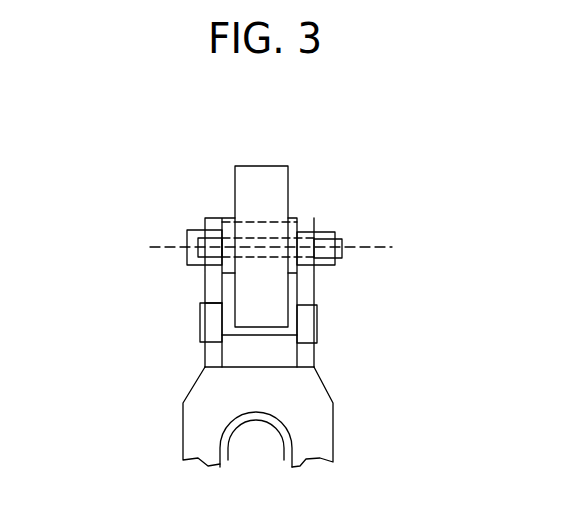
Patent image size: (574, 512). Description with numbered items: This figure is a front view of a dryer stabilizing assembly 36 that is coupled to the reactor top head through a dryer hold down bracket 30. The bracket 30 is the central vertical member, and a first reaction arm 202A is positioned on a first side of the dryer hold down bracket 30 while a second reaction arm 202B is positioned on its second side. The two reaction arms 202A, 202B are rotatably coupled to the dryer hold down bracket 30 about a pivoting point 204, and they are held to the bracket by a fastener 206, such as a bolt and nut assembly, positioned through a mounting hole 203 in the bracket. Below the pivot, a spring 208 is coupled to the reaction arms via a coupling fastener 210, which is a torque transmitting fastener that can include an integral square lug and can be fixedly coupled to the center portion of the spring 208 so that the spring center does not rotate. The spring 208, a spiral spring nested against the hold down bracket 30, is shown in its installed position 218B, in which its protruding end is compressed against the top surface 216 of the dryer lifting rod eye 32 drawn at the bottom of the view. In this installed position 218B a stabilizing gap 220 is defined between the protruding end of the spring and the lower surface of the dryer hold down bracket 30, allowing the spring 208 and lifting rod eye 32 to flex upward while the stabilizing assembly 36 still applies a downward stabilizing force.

The dryer stabilizing assembly 36 is at (199, 150).
The dryer hold down bracket 30 is at (278, 182).
The first reaction arm 202A is at (205, 218).
The second reaction arm 202B is at (310, 228).
The pivoting point 204 is at (163, 245).
The fastener 206 is at (328, 247).
The mounting hole 203 is at (268, 258).
The coupling fastener 210 is at (205, 303).
The stabilizing gap 220 is at (233, 329).
The installed position 218B is at (294, 334).
The spring 208 is at (272, 343).
The top surface 216 is at (272, 368).
The dryer lifting rod eye 32 is at (183, 423).